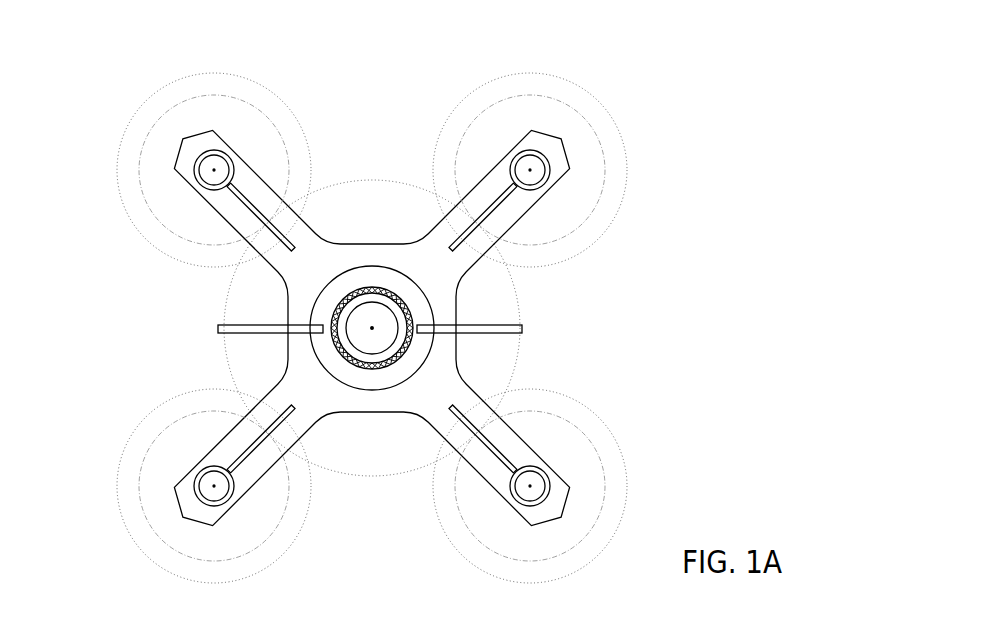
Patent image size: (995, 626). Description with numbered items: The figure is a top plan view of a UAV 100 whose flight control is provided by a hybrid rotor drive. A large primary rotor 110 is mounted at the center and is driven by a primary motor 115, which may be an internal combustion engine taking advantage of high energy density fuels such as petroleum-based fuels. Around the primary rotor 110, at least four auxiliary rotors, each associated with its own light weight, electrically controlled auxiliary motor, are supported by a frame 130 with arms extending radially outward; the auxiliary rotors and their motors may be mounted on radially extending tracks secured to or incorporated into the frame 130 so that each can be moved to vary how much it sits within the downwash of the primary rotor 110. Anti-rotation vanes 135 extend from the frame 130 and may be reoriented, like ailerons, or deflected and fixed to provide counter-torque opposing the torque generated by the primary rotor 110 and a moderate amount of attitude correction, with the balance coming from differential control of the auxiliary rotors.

The UAV 100 is at (675, 53).
The primary rotor 110 is at (345, 180).
The primary motor 115 is at (407, 315).
The frame 130 is at (288, 310).
The anti-rotation vane 135 is at (505, 332).